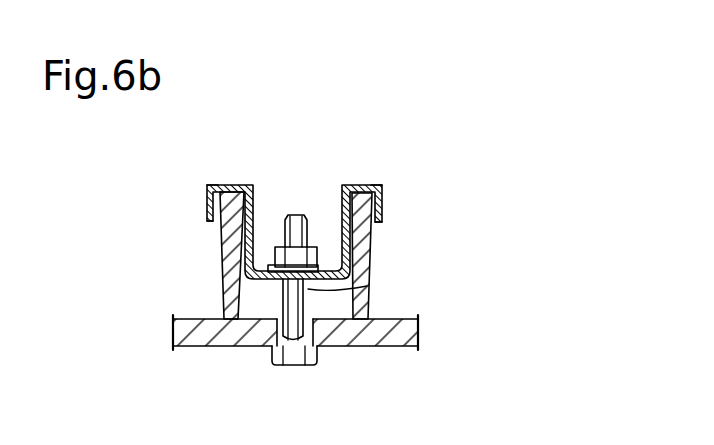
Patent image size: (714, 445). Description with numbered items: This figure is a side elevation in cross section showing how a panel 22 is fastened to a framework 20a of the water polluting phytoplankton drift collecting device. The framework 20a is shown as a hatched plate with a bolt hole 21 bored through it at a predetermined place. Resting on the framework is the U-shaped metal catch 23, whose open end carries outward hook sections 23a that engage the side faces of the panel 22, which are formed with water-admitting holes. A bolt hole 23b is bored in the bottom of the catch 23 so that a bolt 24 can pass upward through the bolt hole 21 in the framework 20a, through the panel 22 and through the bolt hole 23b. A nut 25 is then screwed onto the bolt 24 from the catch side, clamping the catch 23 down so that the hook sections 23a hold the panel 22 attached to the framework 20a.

The framework 20a is at (408, 348).
The bolt hole 21 is at (313, 324).
The panel 22 is at (362, 252).
The catch 23 is at (333, 200).
The hook section 23a is at (232, 184).
The bolt hole 23b is at (367, 286).
The bolt 24 is at (283, 295).
The nut 25 is at (270, 265).